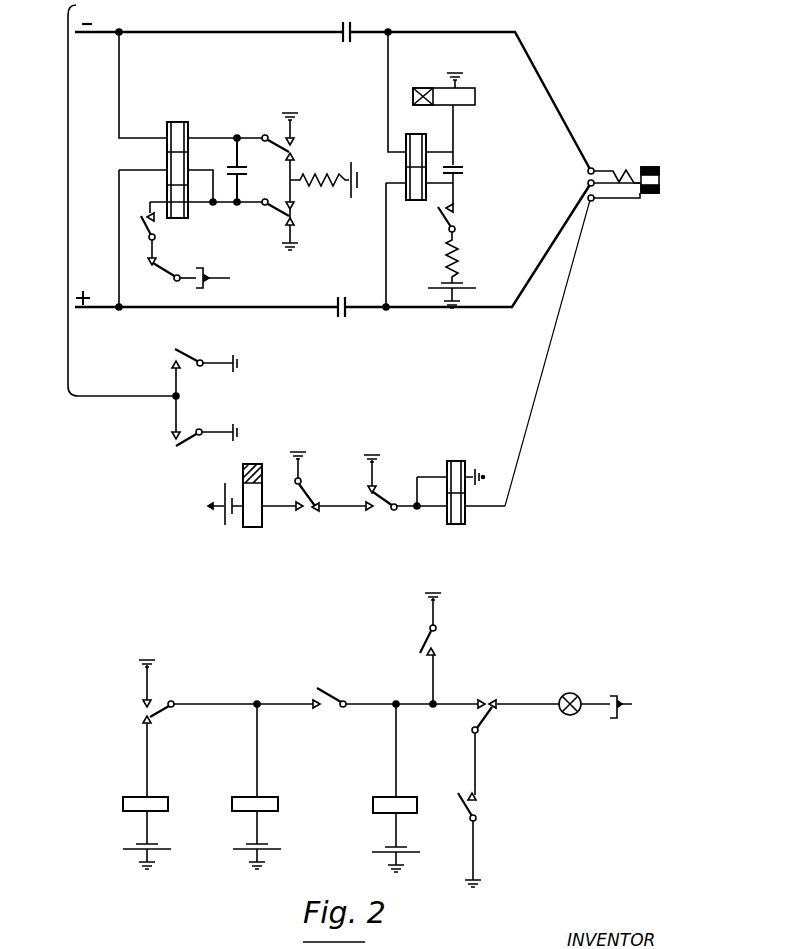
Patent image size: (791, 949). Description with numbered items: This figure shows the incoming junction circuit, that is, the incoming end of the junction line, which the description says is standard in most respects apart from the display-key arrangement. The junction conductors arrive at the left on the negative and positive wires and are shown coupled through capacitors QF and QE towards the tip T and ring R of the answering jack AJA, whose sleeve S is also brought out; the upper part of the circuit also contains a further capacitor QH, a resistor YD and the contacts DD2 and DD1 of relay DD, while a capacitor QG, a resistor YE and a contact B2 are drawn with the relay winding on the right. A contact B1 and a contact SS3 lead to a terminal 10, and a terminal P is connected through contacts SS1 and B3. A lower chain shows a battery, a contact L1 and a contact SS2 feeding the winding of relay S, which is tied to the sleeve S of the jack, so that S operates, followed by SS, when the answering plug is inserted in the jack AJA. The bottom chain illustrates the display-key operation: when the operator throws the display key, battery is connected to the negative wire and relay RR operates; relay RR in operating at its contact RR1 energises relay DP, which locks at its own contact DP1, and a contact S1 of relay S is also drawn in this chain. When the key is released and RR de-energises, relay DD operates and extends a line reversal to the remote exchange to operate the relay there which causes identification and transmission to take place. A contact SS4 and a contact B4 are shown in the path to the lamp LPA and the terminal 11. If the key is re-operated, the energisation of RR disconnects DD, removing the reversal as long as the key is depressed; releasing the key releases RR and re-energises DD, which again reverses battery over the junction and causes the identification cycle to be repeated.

The capacitor QF is at (346, 23).
The capacitor QE is at (340, 297).
The capacitor QH is at (250, 170).
The relay DD contact 2 DD2 is at (296, 157).
The resistor YD is at (323, 183).
The relay DD contact 1 DD1 is at (296, 224).
The relay B contact 1 B1 is at (138, 218).
The relay SS contact 3 SS3 is at (158, 263).
The terminal contact 10 is at (226, 262).
The capacitor QG is at (464, 173).
The relay B contact 2 B2 is at (458, 218).
The resistor YE is at (457, 270).
The contact T is at (612, 167).
The contact R is at (607, 185).
The relay S is at (613, 205).
The jack AJA is at (648, 169).
The terminal P is at (128, 386).
The relay SS contact 1 SS1 is at (204, 368).
The relay B contact 3 B3 is at (204, 427).
The relay L contact 1 L1 is at (301, 481).
The relay SS contact 2 SS2 is at (363, 482).
The contact of relay RR RR1 is at (162, 728).
The locking contact of relay DP DP1 is at (339, 694).
The relay S contact 1 S1 is at (438, 648).
The relay SS contact 4 SS4 is at (515, 737).
The relay B contact 4 B4 is at (479, 840).
The lamp LPA is at (583, 695).
The terminal contact 11 is at (622, 684).